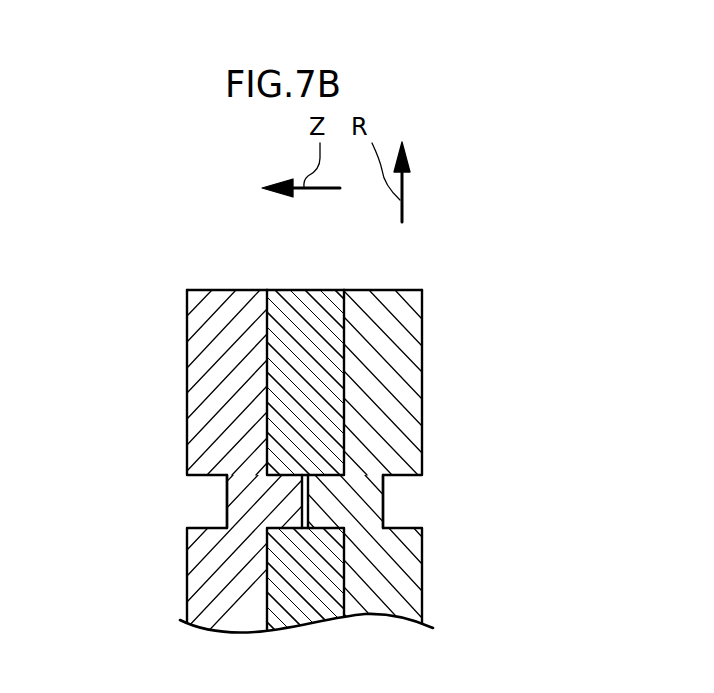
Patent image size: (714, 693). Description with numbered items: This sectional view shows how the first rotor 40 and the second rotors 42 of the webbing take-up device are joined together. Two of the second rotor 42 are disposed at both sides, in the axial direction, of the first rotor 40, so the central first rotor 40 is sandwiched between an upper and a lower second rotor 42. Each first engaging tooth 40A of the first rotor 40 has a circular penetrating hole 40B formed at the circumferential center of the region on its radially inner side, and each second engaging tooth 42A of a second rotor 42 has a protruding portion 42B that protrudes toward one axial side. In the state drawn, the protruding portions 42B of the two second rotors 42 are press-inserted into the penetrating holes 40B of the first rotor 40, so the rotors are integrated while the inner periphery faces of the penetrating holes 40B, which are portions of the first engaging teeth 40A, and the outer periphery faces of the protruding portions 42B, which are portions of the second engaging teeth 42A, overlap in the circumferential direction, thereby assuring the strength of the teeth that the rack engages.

The first rotor 40 is at (293, 288).
The first engaging teeth 40A is at (287, 288).
The penetrating hole 40B is at (323, 481).
The second rotor 42 is at (210, 288).
The second engaging teeth 42A is at (202, 288).
The protruding portion 42B is at (302, 489).